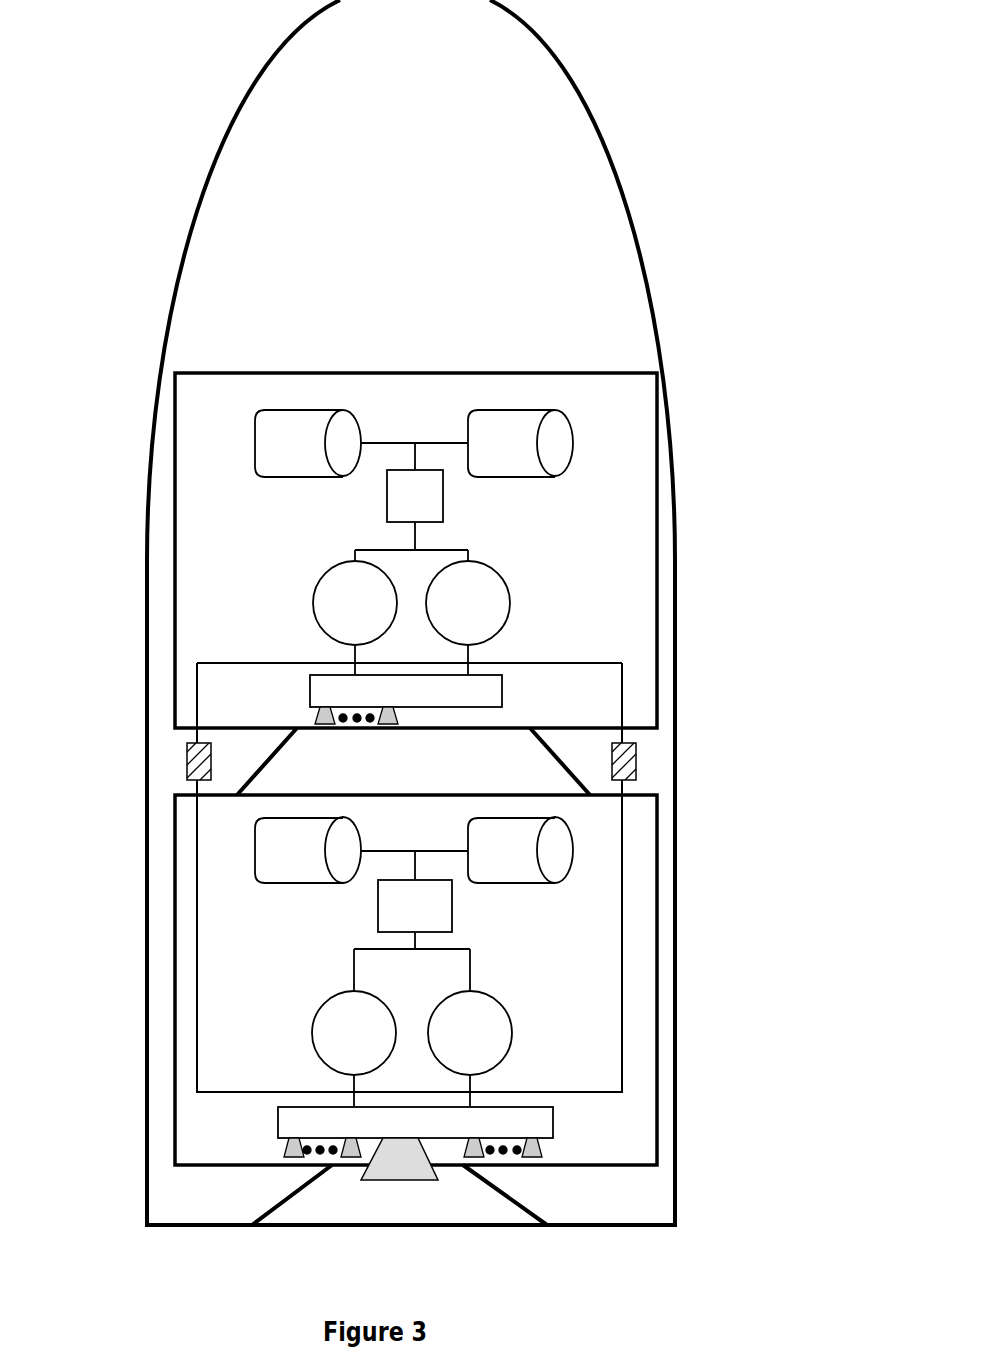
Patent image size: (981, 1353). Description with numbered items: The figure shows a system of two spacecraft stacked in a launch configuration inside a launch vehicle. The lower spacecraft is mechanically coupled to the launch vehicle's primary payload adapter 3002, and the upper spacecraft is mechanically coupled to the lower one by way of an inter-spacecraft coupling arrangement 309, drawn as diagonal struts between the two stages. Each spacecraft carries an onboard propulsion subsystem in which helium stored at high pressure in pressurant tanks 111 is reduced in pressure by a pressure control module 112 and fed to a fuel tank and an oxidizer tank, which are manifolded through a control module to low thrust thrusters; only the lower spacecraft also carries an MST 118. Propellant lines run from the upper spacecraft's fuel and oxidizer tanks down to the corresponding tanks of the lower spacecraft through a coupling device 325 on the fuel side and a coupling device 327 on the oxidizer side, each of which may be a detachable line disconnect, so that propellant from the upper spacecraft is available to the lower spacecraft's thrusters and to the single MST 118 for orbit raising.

The pressurant tanks 111 is at (529, 877).
The pressure control module 112 is at (433, 921).
The inter-spacecraft coupling arrangement 309 is at (560, 760).
The coupling device 325 is at (187, 758).
The coupling device 327 is at (638, 765).
The MST 118 is at (422, 1175).
The primary payload adapter 3002 is at (532, 1210).